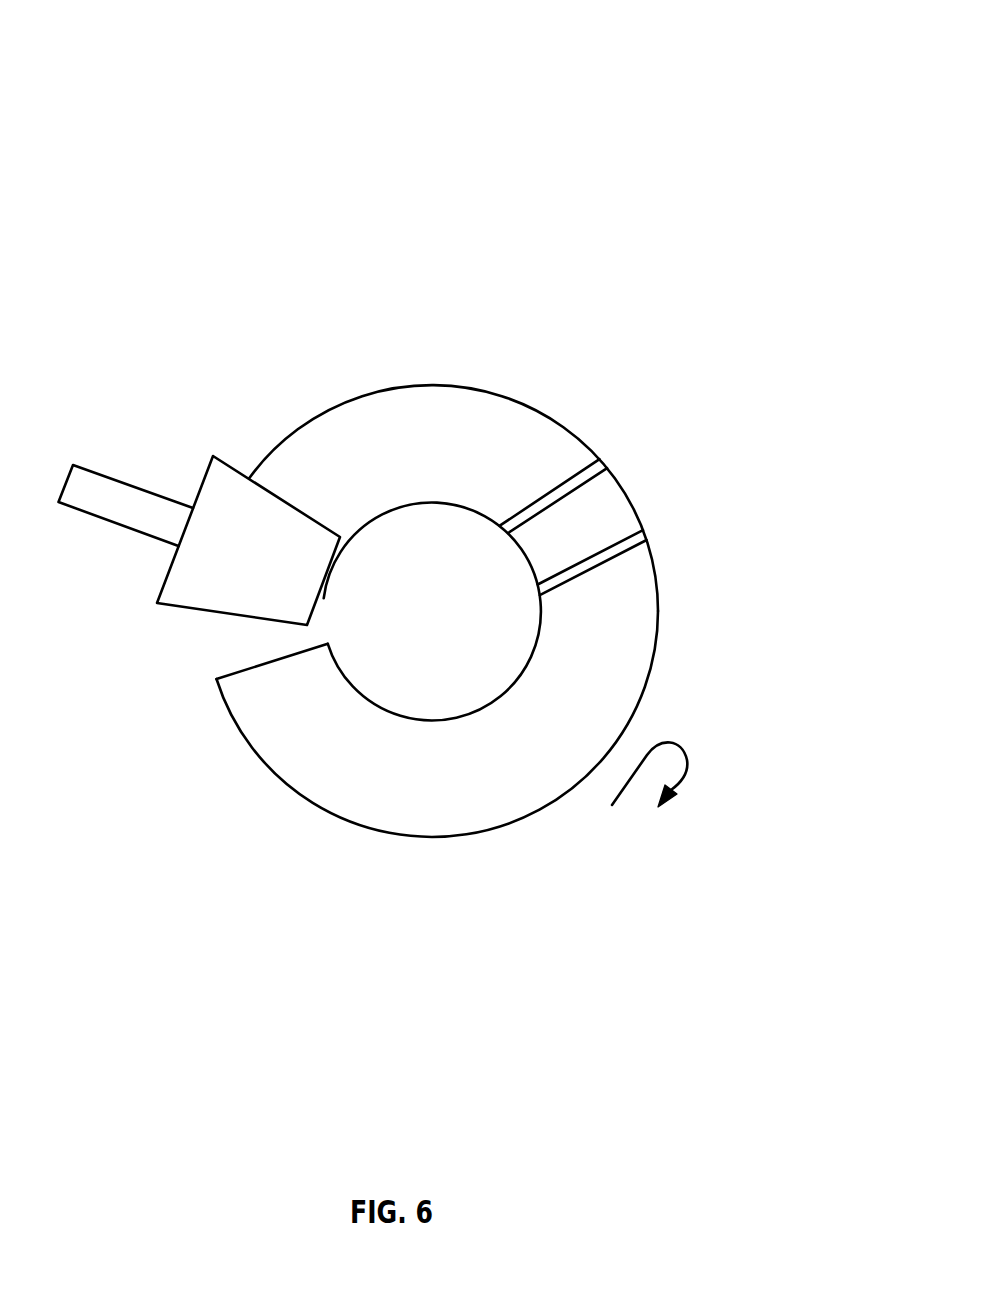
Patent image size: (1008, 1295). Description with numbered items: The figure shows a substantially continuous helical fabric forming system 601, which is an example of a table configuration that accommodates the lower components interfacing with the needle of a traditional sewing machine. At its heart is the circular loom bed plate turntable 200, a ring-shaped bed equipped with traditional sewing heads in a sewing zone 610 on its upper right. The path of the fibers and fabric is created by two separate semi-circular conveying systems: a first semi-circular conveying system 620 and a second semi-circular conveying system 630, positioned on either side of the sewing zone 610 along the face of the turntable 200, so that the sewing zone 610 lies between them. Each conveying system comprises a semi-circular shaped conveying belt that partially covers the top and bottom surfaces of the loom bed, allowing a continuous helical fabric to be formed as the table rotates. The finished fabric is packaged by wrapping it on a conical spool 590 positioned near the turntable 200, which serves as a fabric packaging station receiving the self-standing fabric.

The system 601 is at (602, 139).
The circular loom bed plate turntable 200 is at (465, 432).
The second semi-circular conveying system 630 is at (375, 432).
The first semi-circular conveying system 620 is at (367, 773).
The conical spool 590 is at (217, 520).
The sewing zone 610 is at (587, 522).